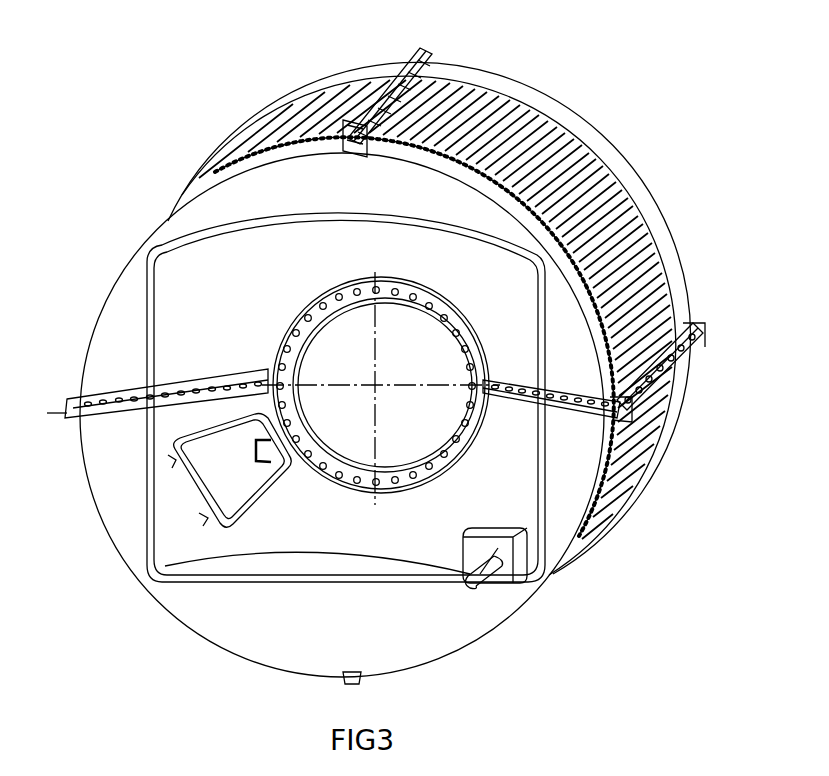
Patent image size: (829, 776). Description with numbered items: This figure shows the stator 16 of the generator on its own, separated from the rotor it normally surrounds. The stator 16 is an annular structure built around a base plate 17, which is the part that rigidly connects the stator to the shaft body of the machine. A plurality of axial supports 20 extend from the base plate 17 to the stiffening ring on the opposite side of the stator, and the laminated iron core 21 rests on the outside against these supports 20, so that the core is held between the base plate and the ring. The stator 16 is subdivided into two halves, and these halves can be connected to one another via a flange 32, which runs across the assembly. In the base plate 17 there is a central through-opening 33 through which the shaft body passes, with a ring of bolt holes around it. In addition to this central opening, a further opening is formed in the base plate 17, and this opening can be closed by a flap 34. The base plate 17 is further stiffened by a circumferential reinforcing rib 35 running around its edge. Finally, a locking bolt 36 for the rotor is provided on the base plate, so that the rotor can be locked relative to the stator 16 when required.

The stator 16 is at (643, 142).
The base plate 17 is at (337, 632).
The axial supports 20 is at (399, 74).
The laminated iron core 21 is at (537, 152).
The flange 32 is at (108, 420).
The central through-opening 33 is at (322, 340).
The flap 34 is at (203, 465).
The circumferential reinforcing rib 35 is at (228, 575).
The locking bolt 36 is at (490, 580).